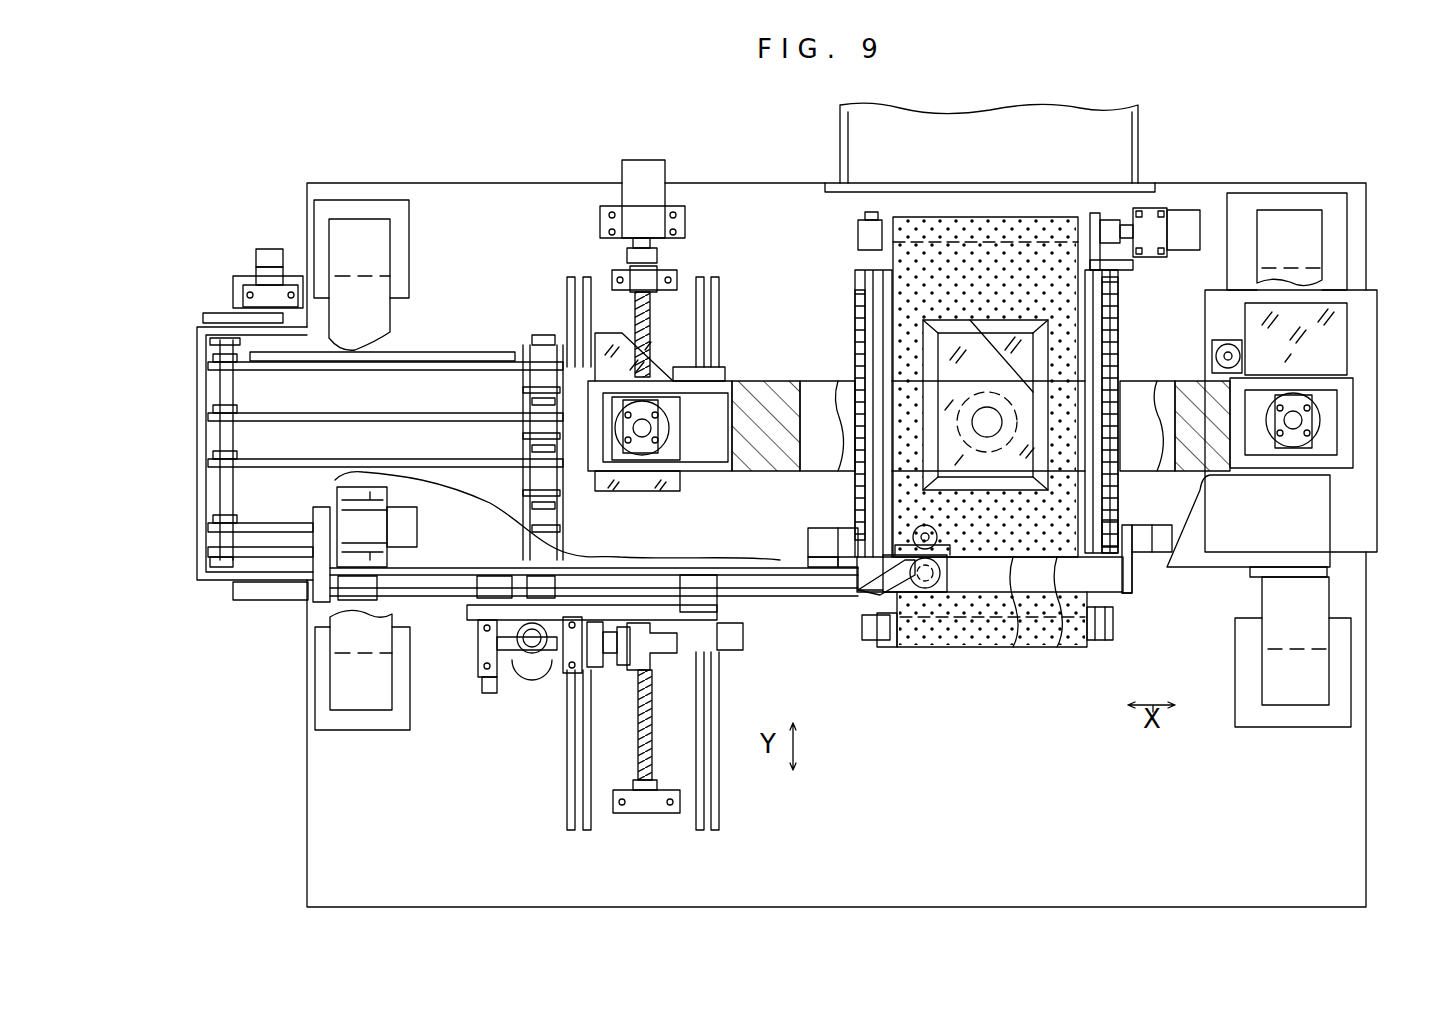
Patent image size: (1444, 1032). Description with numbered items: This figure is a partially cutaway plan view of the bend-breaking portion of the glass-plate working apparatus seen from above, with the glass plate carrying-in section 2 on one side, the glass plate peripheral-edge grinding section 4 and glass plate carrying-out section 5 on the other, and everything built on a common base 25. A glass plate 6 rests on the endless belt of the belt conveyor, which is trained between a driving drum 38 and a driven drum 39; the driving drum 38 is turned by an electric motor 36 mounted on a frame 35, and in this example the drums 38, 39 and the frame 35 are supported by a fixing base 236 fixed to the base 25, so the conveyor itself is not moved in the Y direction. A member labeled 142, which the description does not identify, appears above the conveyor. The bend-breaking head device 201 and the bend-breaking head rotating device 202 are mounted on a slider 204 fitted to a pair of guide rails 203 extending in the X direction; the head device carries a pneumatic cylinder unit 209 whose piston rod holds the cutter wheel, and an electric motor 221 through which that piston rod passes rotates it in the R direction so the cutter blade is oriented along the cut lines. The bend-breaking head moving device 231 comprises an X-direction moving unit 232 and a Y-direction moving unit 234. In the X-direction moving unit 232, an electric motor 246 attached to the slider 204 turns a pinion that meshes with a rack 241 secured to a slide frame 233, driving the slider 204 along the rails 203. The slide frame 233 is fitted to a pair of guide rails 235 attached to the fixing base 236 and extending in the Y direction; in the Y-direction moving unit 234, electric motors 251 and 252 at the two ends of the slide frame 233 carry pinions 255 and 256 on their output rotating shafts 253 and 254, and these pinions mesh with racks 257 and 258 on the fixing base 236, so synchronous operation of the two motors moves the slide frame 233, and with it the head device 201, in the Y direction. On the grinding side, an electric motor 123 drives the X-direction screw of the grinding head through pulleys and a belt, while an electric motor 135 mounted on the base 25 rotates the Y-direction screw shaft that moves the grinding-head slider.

The glass plate carrying-in section 2 is at (1288, 742).
The glass plate peripheral-edge grinding section 4 is at (538, 722).
The glass plate carrying-out section 5 is at (279, 637).
The glass plate 6 is at (1018, 330).
The base 25 is at (1366, 766).
The frame 35 is at (1126, 262).
The electric motor 36 is at (1190, 232).
The driving drum 38 is at (957, 214).
The driven drum 39 is at (1040, 650).
The electric motor 123 is at (417, 520).
The electric motor 135 is at (652, 160).
The chute 142 is at (840, 170).
The bend-breaking head device 201 is at (868, 512).
The bend-breaking head rotating device 202 is at (936, 530).
The guide rails 203 is at (1005, 620).
The slider 204 is at (895, 582).
The pneumatic cylinder unit 209 is at (814, 582).
The electric motor 221 is at (926, 618).
The bend-breaking head moving device 231 is at (1175, 578).
The X-direction moving unit 232 is at (930, 615).
The slide frame 233 is at (1124, 580).
The Y-direction moving unit 234 is at (810, 602).
The guide rails 235 is at (870, 330).
The fixing base 236 is at (862, 265).
The rack 241 is at (1062, 640).
The electric motor 246 is at (885, 645).
The electric motor 251 is at (808, 540).
The electric motor 252 is at (1172, 540).
The output rotating shaft 253 is at (830, 545).
The output rotating shaft 254 is at (1132, 552).
The pinion 255 is at (918, 530).
The pinion 256 is at (1120, 522).
The rack 257 is at (850, 295).
The rack 258 is at (1118, 340).